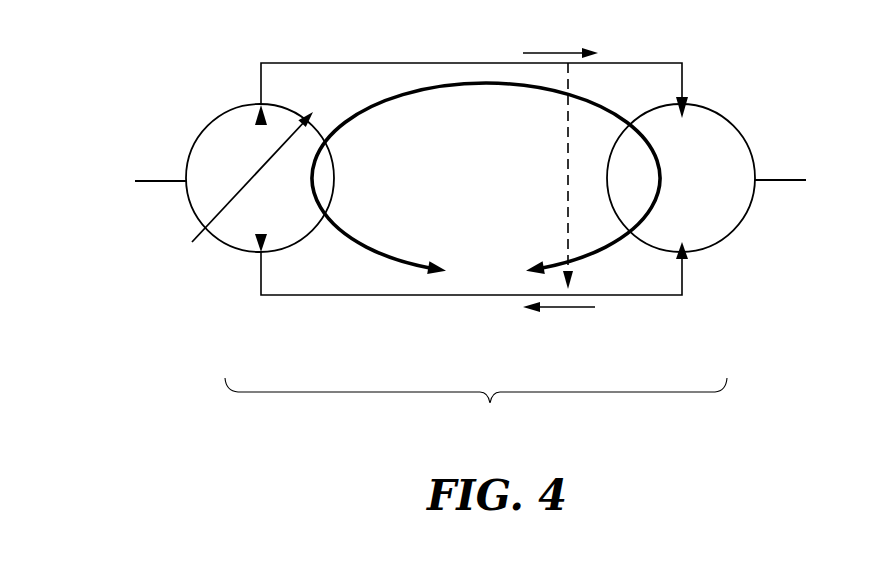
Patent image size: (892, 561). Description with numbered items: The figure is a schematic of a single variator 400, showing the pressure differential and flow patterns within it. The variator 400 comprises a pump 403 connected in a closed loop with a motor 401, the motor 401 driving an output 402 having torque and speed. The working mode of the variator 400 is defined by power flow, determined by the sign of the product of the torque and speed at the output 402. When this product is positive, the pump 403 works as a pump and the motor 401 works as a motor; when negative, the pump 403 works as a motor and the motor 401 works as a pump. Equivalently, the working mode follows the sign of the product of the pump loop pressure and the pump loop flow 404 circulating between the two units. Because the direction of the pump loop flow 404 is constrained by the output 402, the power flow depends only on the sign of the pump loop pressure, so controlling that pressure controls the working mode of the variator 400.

The variator 400 is at (476, 251).
The motor 401 is at (692, 108).
The output 402 is at (767, 174).
The pump 403 is at (240, 118).
The pump loop flow 404 is at (560, 43).